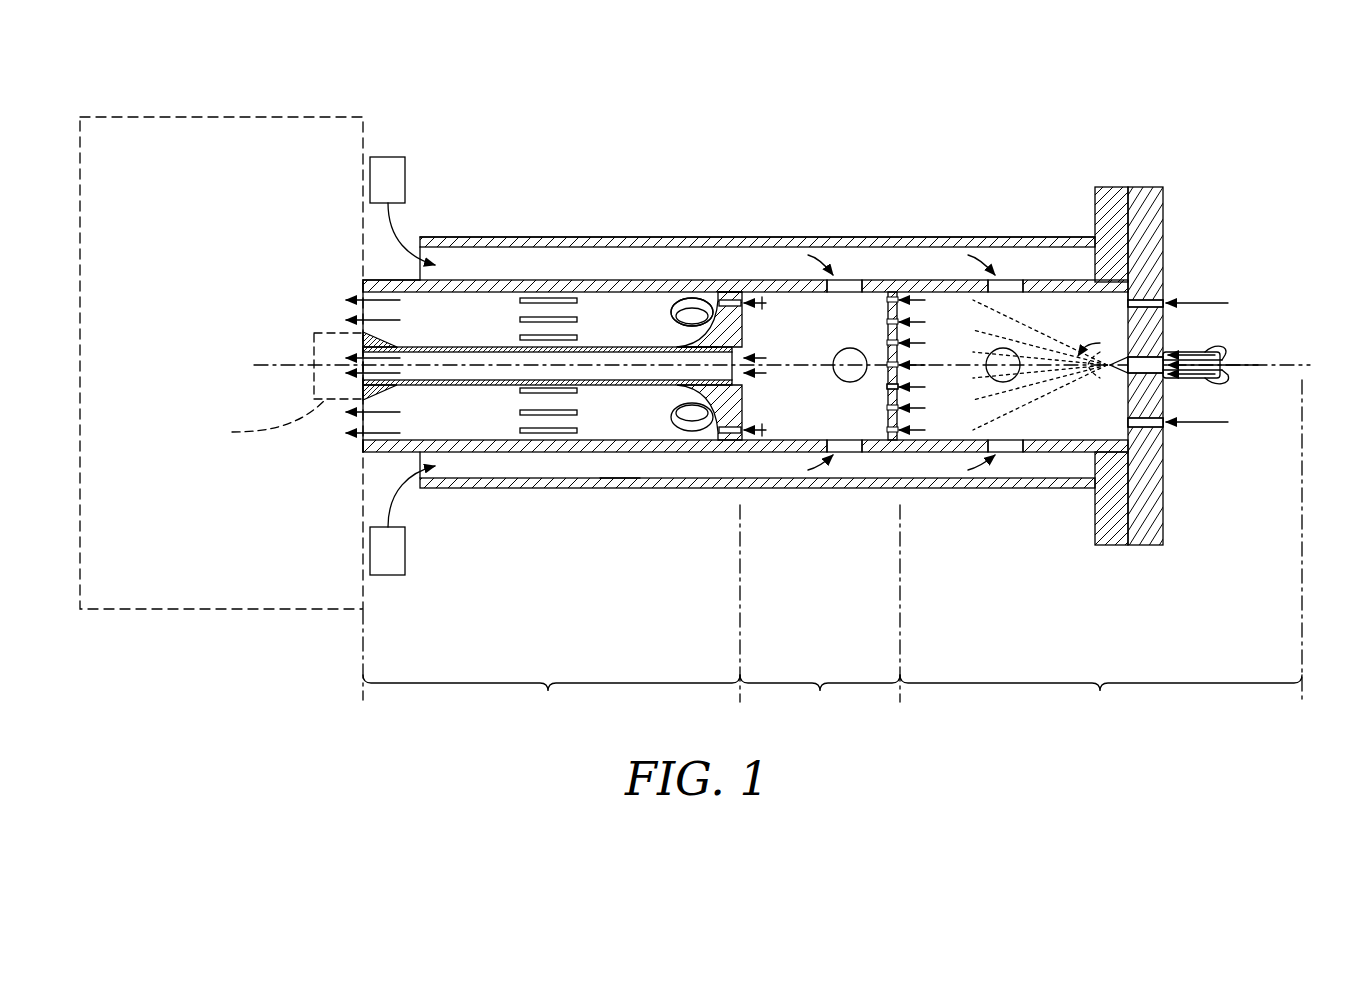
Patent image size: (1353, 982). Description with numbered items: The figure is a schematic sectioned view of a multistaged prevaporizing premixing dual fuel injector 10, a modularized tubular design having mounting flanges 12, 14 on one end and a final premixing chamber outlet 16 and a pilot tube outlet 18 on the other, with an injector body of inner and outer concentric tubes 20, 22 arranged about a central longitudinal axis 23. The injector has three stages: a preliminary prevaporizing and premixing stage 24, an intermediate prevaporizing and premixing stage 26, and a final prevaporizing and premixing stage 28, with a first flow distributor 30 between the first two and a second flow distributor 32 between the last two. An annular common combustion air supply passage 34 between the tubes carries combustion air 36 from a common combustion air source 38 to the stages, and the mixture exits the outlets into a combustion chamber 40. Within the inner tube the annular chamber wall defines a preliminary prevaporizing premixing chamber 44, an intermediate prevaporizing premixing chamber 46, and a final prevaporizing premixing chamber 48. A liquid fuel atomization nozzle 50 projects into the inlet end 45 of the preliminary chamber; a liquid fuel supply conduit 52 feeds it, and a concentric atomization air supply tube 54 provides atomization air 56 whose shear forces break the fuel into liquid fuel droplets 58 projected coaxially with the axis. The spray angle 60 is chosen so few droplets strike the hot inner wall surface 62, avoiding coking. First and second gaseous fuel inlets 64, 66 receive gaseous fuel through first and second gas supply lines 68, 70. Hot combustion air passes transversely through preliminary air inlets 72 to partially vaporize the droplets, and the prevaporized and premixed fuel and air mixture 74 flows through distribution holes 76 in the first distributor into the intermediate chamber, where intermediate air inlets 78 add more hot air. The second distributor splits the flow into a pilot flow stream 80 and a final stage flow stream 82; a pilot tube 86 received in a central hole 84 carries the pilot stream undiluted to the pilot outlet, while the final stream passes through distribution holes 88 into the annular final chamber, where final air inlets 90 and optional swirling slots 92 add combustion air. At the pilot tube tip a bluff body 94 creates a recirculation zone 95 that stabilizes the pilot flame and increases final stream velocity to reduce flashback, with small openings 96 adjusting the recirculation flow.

The fuel injector 10 is at (548, 68).
The mounting flange 12 is at (1100, 187).
The mounting flange 14 is at (1147, 187).
The final premixing chamber outlet 16 is at (365, 312).
The pilot tube outlet 18 is at (360, 368).
The inner tube 20 is at (588, 292).
The outer tube 22 is at (772, 238).
The central longitudinal axis 23 is at (258, 365).
The preliminary prevaporizing and premixing stage 24 is at (1101, 556).
The intermediate prevaporizing and premixing stage 26 is at (820, 619).
The final prevaporizing and premixing stage 28 is at (551, 619).
The first flow distributor 30 is at (892, 294).
The second flow distributor 32 is at (736, 442).
The annular common combustion air supply passage 34 is at (610, 240).
The combustion air 36 is at (397, 230).
The common combustion air source 38 is at (377, 196).
The combustion chamber 40 is at (165, 331).
The preliminary prevaporizing premixing chamber 44 is at (1074, 328).
The inlet end 45 is at (1135, 297).
The intermediate prevaporizing premixing chamber 46 is at (799, 336).
The final prevaporizing premixing chamber 48 is at (459, 426).
The liquid fuel atomization nozzle 50 is at (1143, 363).
The liquid fuel supply conduit 52 is at (1240, 372).
The concentric atomization air supply tube 54 is at (1205, 378).
The atomization air 56 is at (1216, 352).
The liquid fuel droplets 58 is at (1007, 393).
The spray angle 60 is at (1100, 342).
The hot inner wall surface 62 is at (932, 292).
The first gaseous fuel inlet 64 is at (1150, 300).
The second gaseous fuel inlet 66 is at (1158, 428).
The first gas supply line 68 is at (1205, 302).
The second gas supply line 70 is at (1200, 423).
The preliminary air inlets 72 is at (1005, 287).
The prevaporized and premixed fuel and air mixture 74 is at (917, 298).
The distribution holes 76 is at (880, 415).
The intermediate air inlets 78 is at (845, 290).
The pilot flow stream 80 is at (362, 356).
The final stage flow stream 82 is at (385, 297).
The central hole 84 is at (676, 346).
The pilot tube 86 is at (620, 478).
The distribution holes 88 is at (722, 292).
The final air inlets 90 is at (692, 298).
The swirling slots 92 is at (520, 302).
The bluff body 94 is at (385, 440).
The recirculation zone 95 is at (263, 425).
The small openings 96 is at (375, 341).